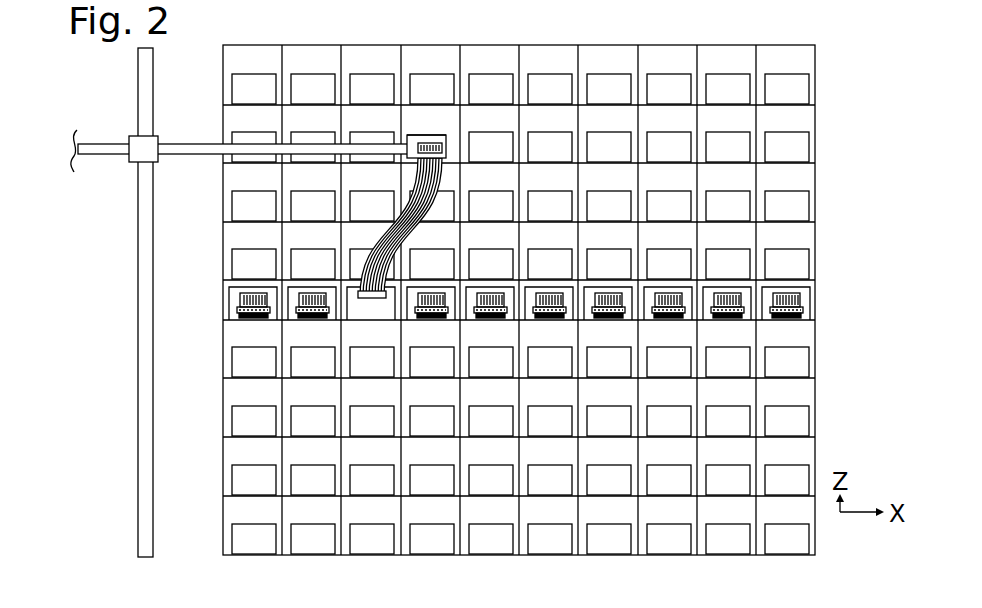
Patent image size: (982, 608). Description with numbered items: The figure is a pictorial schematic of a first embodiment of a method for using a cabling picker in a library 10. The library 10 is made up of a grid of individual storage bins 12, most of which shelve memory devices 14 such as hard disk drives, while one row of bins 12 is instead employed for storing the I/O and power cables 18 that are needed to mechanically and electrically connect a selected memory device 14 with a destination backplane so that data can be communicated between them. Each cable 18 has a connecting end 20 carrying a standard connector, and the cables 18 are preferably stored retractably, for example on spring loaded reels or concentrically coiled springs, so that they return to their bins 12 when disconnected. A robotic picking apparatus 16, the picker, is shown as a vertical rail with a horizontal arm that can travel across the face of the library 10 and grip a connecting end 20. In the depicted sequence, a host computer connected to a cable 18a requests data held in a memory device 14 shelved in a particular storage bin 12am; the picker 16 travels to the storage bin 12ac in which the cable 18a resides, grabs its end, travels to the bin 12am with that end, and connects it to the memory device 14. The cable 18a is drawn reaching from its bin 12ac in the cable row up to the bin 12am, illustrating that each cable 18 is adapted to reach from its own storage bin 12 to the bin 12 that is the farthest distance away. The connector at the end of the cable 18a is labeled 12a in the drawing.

The library 10 is at (477, 279).
The storage bins 12 is at (797, 62).
The panel connector 12a is at (450, 152).
The storage bin shelving the cable 12ac is at (372, 324).
The storage bin shelving the memory device 12am is at (420, 122).
The memory devices 14 is at (520, 314).
The robotic picking apparatus 16 is at (137, 395).
The I/O and power cables 18 is at (228, 293).
The cable 18a is at (412, 177).
The connecting end 20 is at (257, 322).